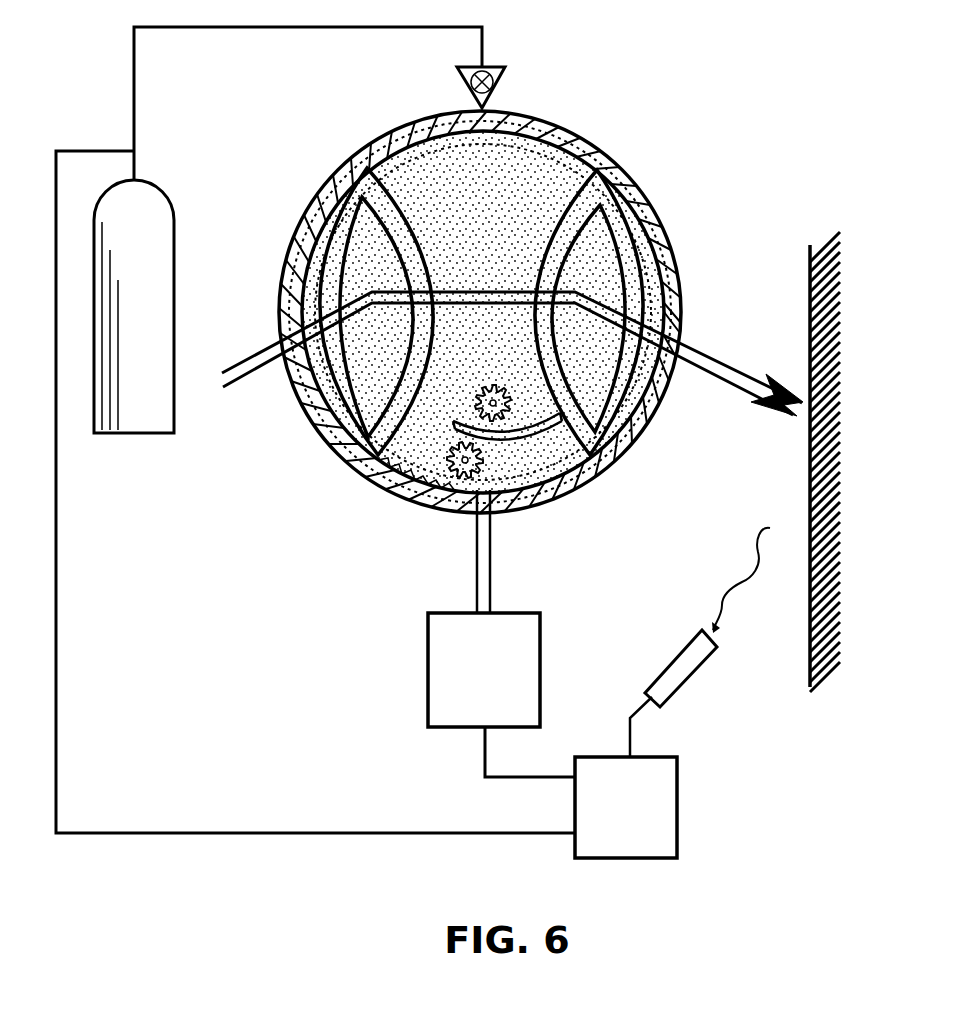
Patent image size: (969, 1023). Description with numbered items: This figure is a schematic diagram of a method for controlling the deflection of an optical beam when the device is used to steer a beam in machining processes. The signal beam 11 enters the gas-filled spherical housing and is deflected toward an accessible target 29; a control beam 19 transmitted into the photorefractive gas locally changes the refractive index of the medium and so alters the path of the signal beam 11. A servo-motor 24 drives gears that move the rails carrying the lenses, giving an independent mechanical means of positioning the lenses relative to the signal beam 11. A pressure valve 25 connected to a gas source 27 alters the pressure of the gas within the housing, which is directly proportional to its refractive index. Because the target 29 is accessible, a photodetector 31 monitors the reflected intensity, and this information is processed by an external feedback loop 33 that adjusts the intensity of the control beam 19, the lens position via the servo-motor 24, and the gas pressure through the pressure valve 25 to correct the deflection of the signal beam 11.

The signal beam 11 is at (243, 377).
The control beam 19 is at (233, 368).
The servo-motor 24 is at (470, 556).
The pressure valve 25 is at (499, 87).
The gas source 27 is at (134, 306).
The target 29 is at (850, 462).
The photodetector 31 is at (700, 642).
The external feedback loop 33 is at (581, 792).